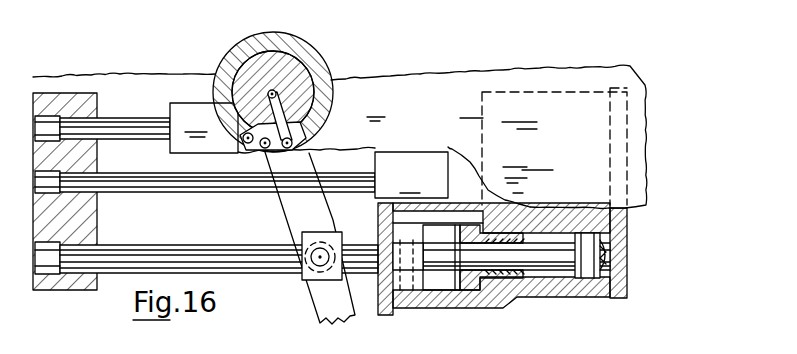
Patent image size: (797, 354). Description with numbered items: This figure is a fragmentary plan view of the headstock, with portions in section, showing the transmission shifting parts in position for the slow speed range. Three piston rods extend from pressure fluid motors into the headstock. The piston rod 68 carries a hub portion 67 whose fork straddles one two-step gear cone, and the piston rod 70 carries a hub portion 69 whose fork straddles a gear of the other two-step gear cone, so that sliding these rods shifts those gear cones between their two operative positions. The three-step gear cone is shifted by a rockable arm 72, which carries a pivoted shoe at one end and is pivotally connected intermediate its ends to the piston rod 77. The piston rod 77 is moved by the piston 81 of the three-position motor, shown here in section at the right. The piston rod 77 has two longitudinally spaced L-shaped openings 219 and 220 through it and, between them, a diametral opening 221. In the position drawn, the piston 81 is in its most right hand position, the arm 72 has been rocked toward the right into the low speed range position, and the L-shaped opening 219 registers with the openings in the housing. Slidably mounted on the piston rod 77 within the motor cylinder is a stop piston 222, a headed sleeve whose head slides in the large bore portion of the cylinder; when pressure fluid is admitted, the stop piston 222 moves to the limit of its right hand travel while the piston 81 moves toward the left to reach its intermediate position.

The hub portion 67 is at (414, 188).
The piston rod 68 is at (145, 172).
The hub portion 69 is at (190, 110).
The piston rod 70 is at (128, 117).
The rockable arm 72 is at (302, 219).
The piston rod 77 is at (210, 248).
The piston 81 is at (584, 270).
The L-shaped opening 219 is at (407, 257).
The diametral opening 221 is at (448, 268).
The stop piston 222 is at (465, 285).
The L-shaped opening 220 is at (505, 254).